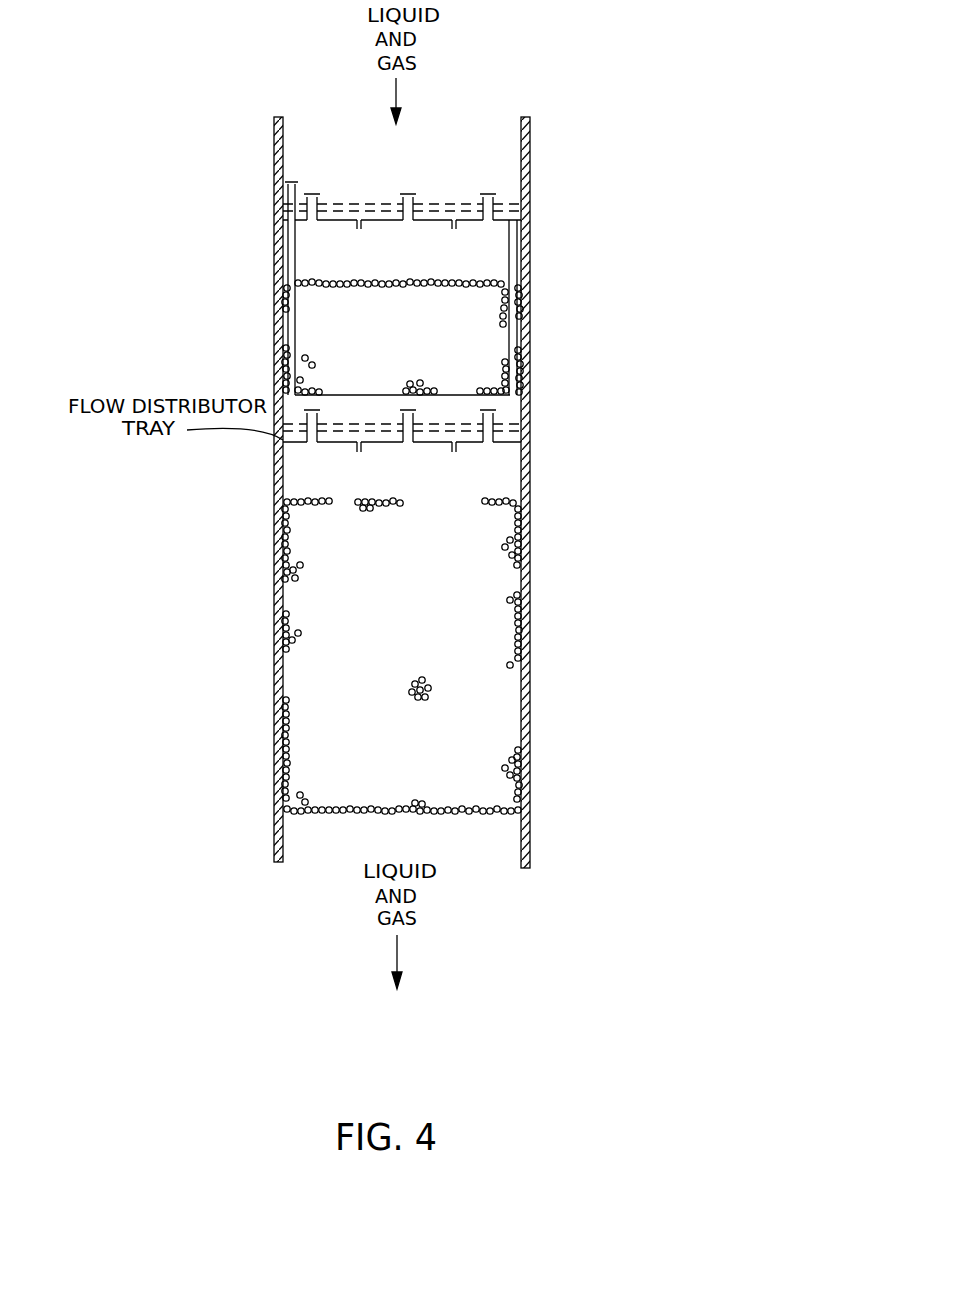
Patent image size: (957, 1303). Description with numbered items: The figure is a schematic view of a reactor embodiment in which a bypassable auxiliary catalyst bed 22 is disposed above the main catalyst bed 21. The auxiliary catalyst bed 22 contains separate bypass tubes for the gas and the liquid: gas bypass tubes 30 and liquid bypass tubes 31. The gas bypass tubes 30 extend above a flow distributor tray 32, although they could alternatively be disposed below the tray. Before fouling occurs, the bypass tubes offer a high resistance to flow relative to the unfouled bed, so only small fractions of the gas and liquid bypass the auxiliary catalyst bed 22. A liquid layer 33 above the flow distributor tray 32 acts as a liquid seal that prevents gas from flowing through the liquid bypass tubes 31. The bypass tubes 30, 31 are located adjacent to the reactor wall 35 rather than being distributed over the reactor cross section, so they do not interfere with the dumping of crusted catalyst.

The main catalyst bed 21 is at (408, 648).
The auxiliary catalyst bed 22 is at (443, 350).
The gas bypass tubes 30 is at (291, 238).
The liquid bypass tubes 31 is at (518, 236).
The flow distributor tray 32 is at (507, 219).
The liquid layer 33 is at (440, 208).
The reactor wall 35 is at (276, 325).